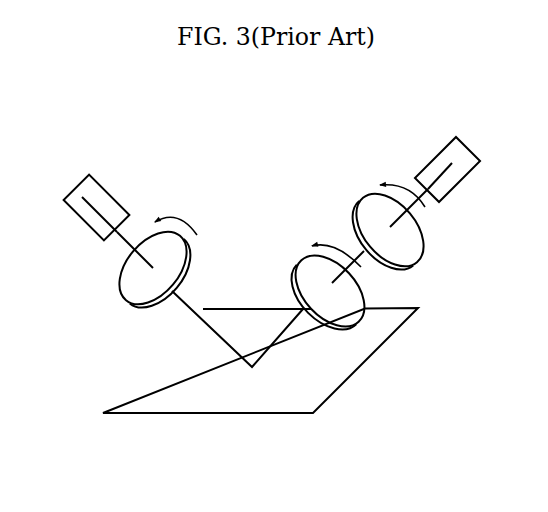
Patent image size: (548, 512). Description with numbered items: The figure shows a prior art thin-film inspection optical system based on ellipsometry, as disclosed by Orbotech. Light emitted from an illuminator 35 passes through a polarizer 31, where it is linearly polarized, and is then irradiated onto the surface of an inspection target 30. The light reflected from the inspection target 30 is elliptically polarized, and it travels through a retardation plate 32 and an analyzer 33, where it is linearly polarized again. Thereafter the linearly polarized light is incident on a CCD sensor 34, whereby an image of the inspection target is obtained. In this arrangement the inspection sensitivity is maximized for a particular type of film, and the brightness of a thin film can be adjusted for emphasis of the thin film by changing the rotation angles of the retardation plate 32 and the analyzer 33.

The inspection target 30 is at (238, 388).
The polarizer 31 is at (128, 285).
The retardation plate 32 is at (362, 310).
The analyzer 33 is at (417, 247).
The CCD sensor 34 is at (463, 183).
The illuminator 35 is at (80, 222).